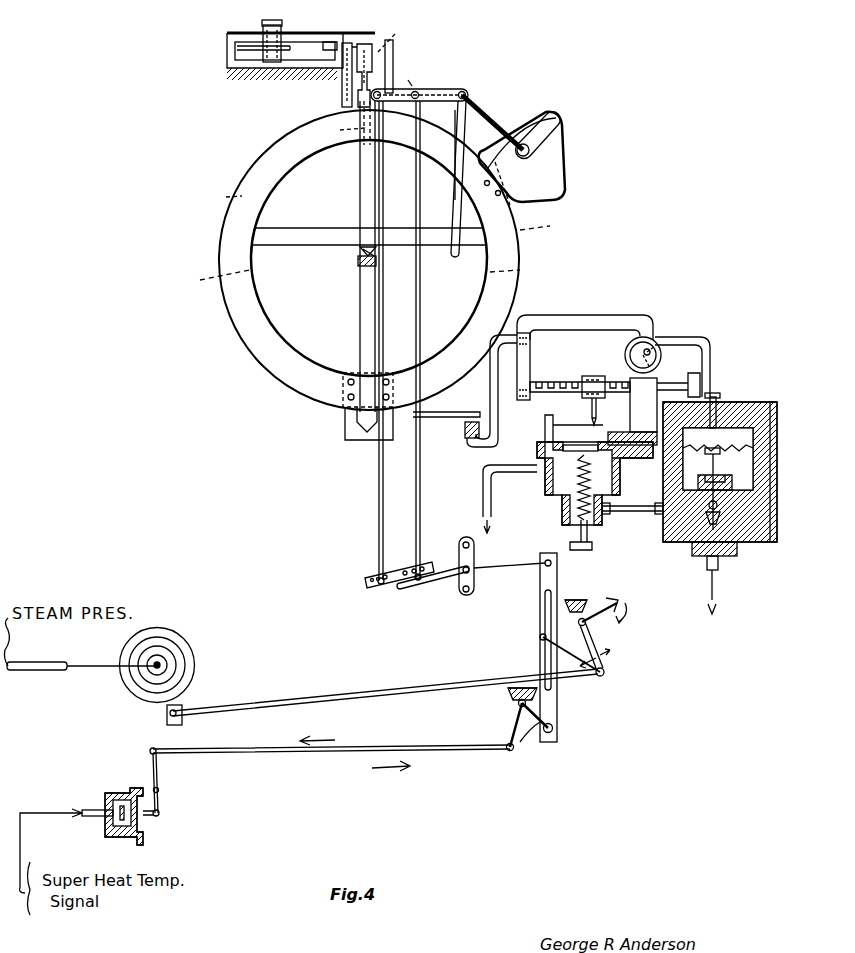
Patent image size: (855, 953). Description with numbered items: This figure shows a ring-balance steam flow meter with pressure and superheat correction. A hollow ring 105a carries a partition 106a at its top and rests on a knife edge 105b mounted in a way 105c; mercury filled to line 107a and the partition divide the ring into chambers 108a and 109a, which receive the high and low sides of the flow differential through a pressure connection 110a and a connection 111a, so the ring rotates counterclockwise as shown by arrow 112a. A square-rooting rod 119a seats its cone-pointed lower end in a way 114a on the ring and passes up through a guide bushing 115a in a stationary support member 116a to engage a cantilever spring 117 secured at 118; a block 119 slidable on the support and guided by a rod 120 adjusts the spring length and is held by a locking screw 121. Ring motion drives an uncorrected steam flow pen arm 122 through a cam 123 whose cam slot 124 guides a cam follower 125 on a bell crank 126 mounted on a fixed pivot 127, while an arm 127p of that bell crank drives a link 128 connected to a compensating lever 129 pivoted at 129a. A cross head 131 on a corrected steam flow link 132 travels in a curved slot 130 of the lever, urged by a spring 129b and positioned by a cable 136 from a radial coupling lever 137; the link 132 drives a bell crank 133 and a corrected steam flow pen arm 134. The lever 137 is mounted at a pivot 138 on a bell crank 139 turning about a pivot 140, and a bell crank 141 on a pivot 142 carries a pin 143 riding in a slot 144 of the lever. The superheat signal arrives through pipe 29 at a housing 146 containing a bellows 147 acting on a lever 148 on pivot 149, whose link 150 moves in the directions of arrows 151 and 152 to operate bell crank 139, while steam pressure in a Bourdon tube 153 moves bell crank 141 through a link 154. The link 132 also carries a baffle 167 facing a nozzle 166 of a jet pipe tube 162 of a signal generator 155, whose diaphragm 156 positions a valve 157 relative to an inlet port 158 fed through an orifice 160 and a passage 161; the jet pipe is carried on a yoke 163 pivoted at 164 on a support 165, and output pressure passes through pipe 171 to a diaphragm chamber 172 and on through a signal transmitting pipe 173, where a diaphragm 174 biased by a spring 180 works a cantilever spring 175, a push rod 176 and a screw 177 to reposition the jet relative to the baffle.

The pipe 29 is at (82, 810).
The hollow ring 105a is at (512, 254).
The knife edge 105b is at (358, 252).
The way 105c is at (358, 266).
The partition 106a is at (336, 126).
The line 107a is at (538, 272).
The chamber 108a is at (558, 223).
The chamber 109a is at (335, 258).
The pressure connection 110a is at (393, 46).
The connection 111a is at (343, 92).
The arrow 112a is at (281, 163).
The way 114a is at (346, 432).
The guide bushing 115a is at (405, 32).
The support member 116a is at (228, 66).
The cantilever spring 117 is at (366, 44).
The securing point 118 is at (237, 42).
The block 119 is at (283, 37).
The vertical rod 119a is at (364, 318).
The rod 120 is at (236, 47).
The locking screw 121 is at (270, 20).
The uncorrected steam flow pen arm 122 is at (451, 202).
The cam 123 is at (551, 184).
The cam slot 124 is at (555, 133).
The cam follower 125 is at (542, 124).
The bell crank 126 is at (485, 113).
The fixed pivot 127 is at (467, 93).
The arm 127p is at (414, 77).
The link 128 is at (384, 325).
The compensating lever 129 is at (366, 585).
The pivot 129a is at (474, 576).
The spring 129b is at (408, 565).
The curved slot 130 is at (445, 560).
The cross head 131 is at (434, 590).
The corrected steam flow link 132 is at (421, 305).
The bell crank 133 is at (440, 89).
The corrected steam flow pen arm 134 is at (461, 228).
The cable 136 is at (526, 562).
The radial coupling lever 137 is at (558, 581).
The pivot 138 is at (556, 730).
The bell crank 139 is at (533, 743).
The pivot 140 is at (518, 707).
The bell crank 141 is at (603, 642).
The pivot 142 is at (622, 625).
The pin 143 is at (540, 641).
The slot 144 is at (545, 618).
The housing 146 is at (118, 828).
The pressure deflectable member 147 is at (128, 790).
The lever 148 is at (160, 811).
The pivot 149 is at (160, 790).
The link 150 is at (326, 762).
The arrow 151 is at (318, 730).
The arrow 152 is at (391, 775).
The Bourdon tube 153 is at (196, 667).
The link 154 is at (358, 692).
The signal generator 155 is at (742, 361).
The metal diaphragm 156 is at (736, 445).
The valve 157 is at (718, 505).
The inlet port 158 is at (738, 548).
The orifice 160 is at (791, 464).
The passage 161 is at (716, 400).
The jet pipe tube 162 is at (685, 337).
The inverted U-shaped yoke 163 is at (590, 320).
The pivot 164 is at (652, 340).
The support 165 is at (640, 413).
The nozzle 166 is at (465, 433).
The baffle 167 is at (470, 412).
The pipe 171 is at (638, 525).
The diaphragm chamber 172 is at (562, 484).
The signal transmitting pipe 173 is at (482, 500).
The diaphragm 174 is at (542, 452).
The cantilever spring 175 is at (576, 420).
The push rod 176 is at (620, 382).
The screw 177 is at (568, 382).
The spring 180 is at (566, 512).